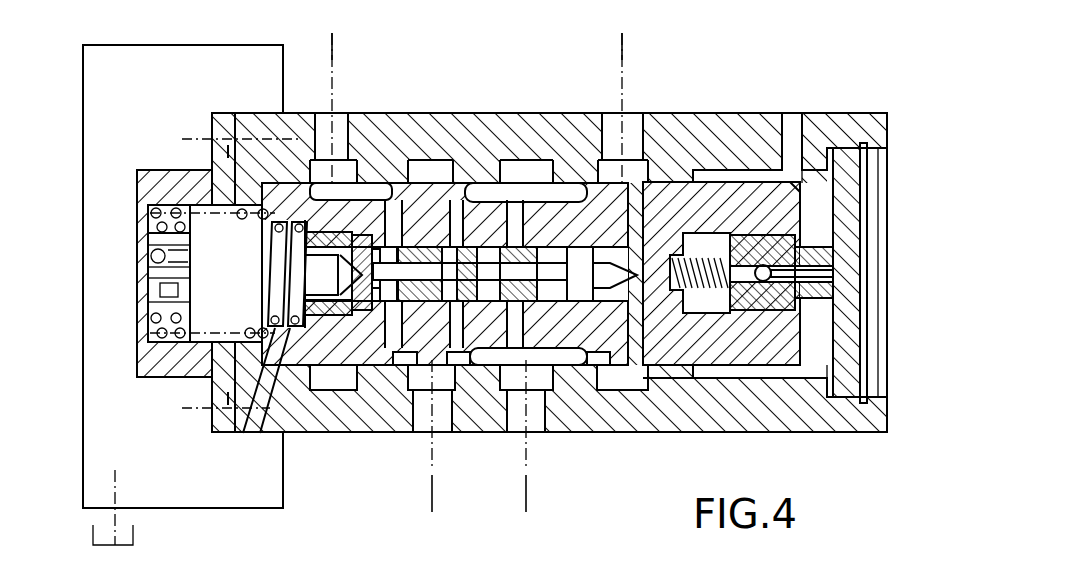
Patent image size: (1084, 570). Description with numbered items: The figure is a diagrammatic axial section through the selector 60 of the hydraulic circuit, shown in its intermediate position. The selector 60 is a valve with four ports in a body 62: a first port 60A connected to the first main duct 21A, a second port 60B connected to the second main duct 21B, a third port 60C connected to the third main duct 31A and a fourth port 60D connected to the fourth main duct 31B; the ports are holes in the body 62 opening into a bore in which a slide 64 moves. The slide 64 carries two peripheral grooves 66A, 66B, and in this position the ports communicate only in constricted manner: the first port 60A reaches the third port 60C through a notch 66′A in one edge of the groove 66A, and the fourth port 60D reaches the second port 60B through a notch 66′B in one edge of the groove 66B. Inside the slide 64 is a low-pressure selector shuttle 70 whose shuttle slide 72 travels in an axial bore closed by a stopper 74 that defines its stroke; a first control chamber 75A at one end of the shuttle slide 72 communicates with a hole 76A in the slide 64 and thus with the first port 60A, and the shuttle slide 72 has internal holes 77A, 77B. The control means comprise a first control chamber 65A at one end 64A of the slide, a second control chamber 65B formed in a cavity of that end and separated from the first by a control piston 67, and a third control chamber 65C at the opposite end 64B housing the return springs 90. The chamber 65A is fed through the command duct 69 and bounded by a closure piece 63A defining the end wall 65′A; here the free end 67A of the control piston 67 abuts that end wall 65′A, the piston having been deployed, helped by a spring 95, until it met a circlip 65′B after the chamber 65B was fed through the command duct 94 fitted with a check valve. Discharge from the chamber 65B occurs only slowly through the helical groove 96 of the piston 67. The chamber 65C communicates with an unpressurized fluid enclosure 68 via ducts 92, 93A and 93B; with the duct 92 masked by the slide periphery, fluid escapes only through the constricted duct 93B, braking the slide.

The selector 60 is at (676, 99).
The slide 64 is at (723, 176).
The end of the slide 64A is at (795, 400).
The end of the slide 64B is at (236, 192).
The third control chamber 65C is at (252, 287).
The duct 93A is at (150, 257).
The duct 93B is at (148, 286).
The return springs 90 is at (235, 215).
The stopper 74 is at (330, 232).
The duct 92 is at (252, 438).
The low-pressure selector shuttle 70 is at (423, 228).
The groove 66B is at (378, 192).
The groove 66A is at (527, 192).
The notch 66′B is at (405, 392).
The notch 66′A is at (660, 375).
The shuttle slide 72 is at (478, 242).
The hole 77B is at (413, 296).
The hole 77A is at (470, 296).
The first control chamber 75A is at (583, 250).
The body 62 is at (528, 125).
The hole 76A is at (638, 333).
The spring 95 is at (700, 245).
The helical groove 96 is at (755, 245).
The command duct 94 is at (842, 290).
The control piston 67 is at (835, 271).
The free end of the control piston 67A is at (838, 320).
The first control chamber 65A is at (822, 215).
The closure piece 63A is at (864, 247).
The circlip 65′B is at (808, 215).
The end wall 65′A is at (828, 355).
The second control chamber 65B is at (718, 366).
The command duct 69 is at (792, 130).
The second port 60B is at (325, 130).
The first port 60A is at (612, 128).
The fourth port 60D is at (440, 470).
The third port 60C is at (535, 425).
The second main duct 21B is at (335, 50).
The first main duct 21A is at (625, 50).
The fourth main duct 31B is at (431, 500).
The third main duct 31A is at (528, 500).
The unpressurized fluid enclosure 68 is at (178, 508).